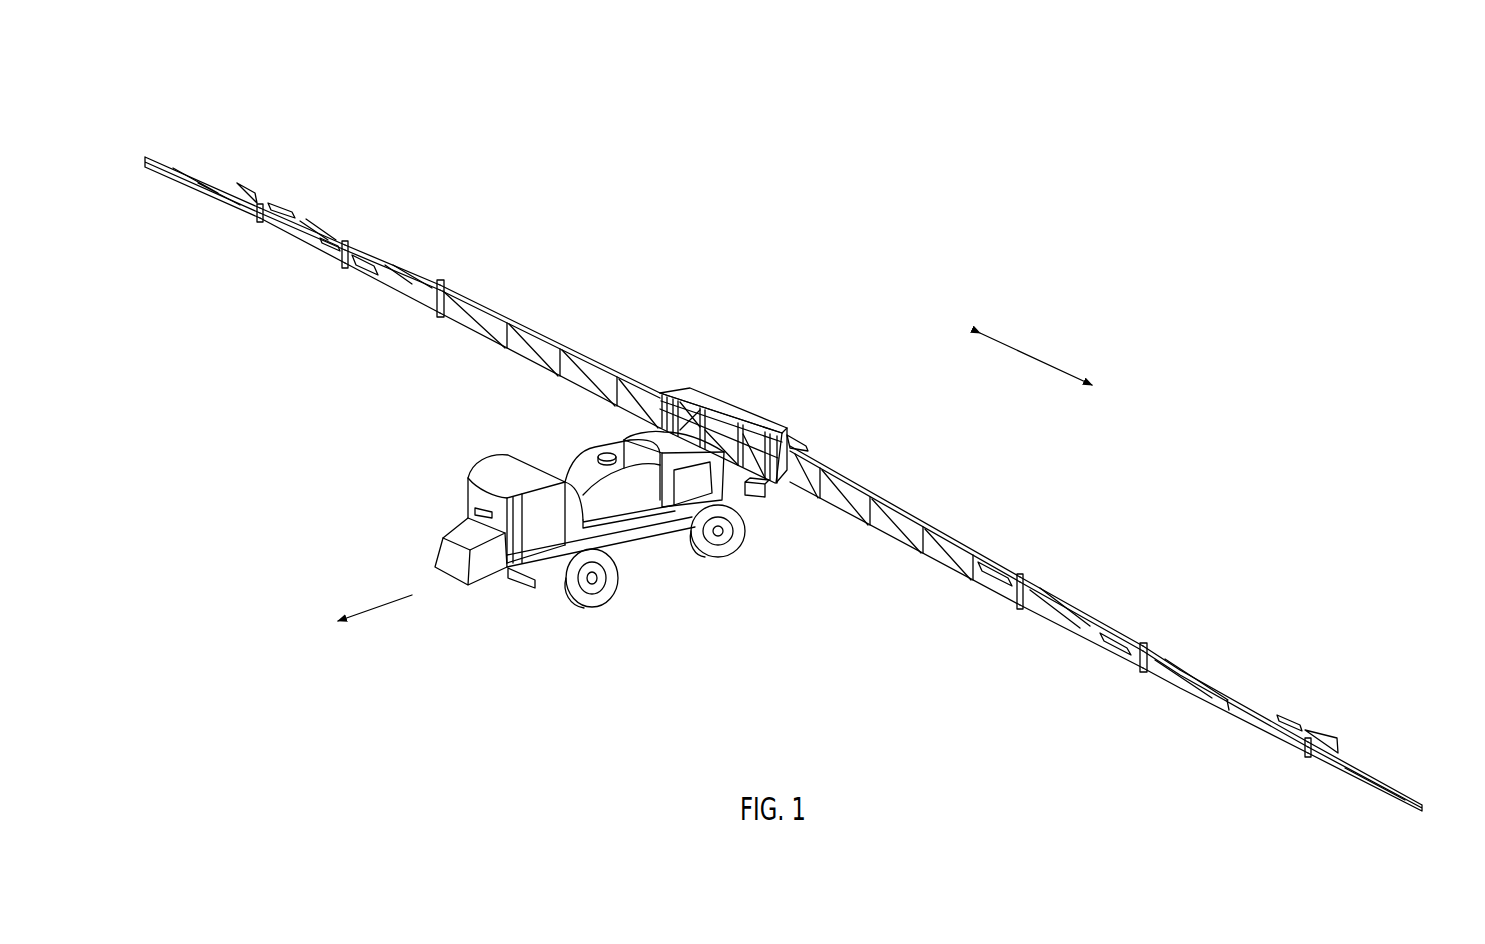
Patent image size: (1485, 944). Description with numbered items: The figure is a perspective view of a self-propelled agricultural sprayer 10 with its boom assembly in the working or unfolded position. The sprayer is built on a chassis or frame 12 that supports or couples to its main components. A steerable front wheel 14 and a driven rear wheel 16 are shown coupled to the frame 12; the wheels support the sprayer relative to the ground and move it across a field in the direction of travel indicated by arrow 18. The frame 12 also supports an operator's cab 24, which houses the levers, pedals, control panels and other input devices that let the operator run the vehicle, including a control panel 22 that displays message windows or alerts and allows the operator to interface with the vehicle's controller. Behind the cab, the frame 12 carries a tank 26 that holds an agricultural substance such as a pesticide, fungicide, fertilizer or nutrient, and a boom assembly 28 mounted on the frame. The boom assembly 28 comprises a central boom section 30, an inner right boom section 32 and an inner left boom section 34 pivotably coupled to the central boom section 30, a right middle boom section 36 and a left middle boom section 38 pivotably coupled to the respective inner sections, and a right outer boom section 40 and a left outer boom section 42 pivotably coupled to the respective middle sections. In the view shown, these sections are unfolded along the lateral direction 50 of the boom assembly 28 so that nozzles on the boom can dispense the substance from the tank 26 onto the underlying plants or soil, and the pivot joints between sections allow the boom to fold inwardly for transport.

The agricultural sprayer 10 is at (240, 150).
The frame 12 is at (627, 547).
The front wheels 14 is at (584, 610).
The rear wheels 16 is at (730, 554).
The direction of travel 18 is at (378, 615).
The control panel 22 is at (480, 504).
The operator's cab 24 is at (492, 475).
The tank 26 is at (573, 460).
The boom assembly 28 is at (839, 440).
The central boom section 30 is at (740, 404).
The inner right boom section 32 is at (907, 508).
The inner left boom section 34 is at (528, 323).
The right middle boom section 36 is at (1110, 628).
The left middle boom section 38 is at (380, 257).
The right outer boom section 40 is at (1222, 691).
The left outer boom section 42 is at (336, 242).
The lateral direction 50 is at (1036, 358).